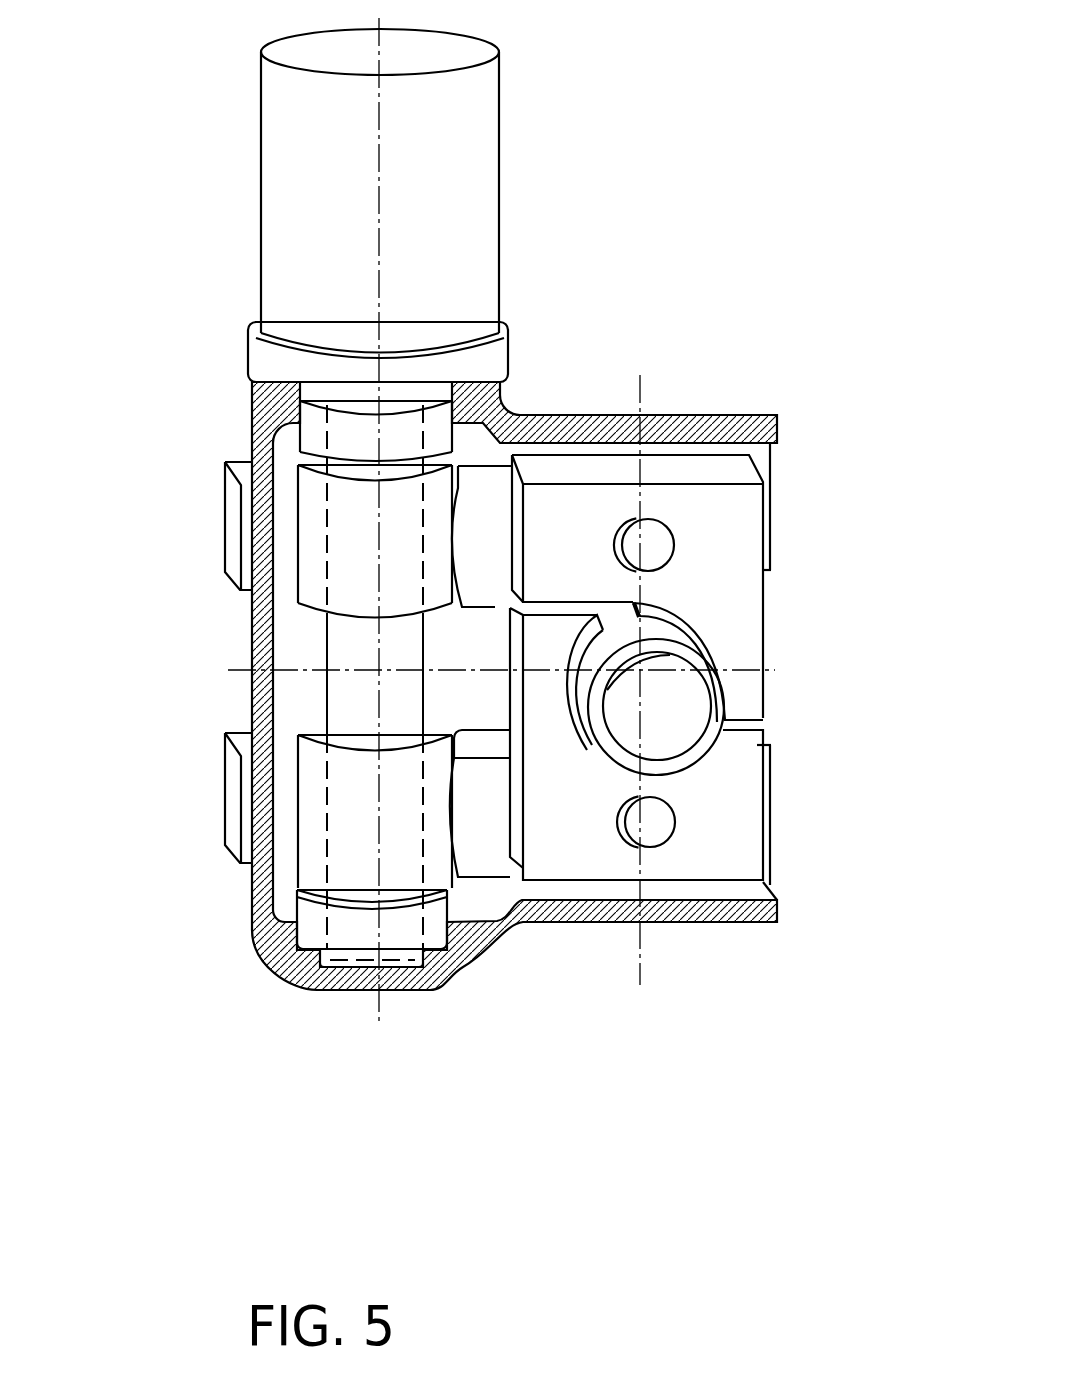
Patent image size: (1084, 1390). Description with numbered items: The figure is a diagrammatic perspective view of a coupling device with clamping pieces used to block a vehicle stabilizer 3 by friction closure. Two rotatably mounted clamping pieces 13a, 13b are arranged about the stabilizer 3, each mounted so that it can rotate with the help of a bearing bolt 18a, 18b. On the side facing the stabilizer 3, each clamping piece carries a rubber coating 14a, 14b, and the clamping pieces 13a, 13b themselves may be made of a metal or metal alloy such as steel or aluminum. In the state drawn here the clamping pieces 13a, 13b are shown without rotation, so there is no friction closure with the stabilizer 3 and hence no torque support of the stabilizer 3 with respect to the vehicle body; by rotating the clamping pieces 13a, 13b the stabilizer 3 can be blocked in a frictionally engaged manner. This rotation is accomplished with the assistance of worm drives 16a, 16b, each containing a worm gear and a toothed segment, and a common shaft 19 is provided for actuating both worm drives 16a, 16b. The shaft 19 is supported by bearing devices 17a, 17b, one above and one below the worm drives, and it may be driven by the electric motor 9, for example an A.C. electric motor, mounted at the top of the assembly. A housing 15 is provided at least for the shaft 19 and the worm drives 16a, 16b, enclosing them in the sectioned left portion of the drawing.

The electric motor 9 is at (296, 174).
The bearing device 17a is at (315, 432).
The housing 15 is at (235, 508).
The shaft 19 is at (355, 690).
The bearing device 17b is at (312, 923).
The worm drive 16a is at (490, 543).
The worm drive 16b is at (490, 820).
The clamping piece 13a is at (733, 546).
The clamping piece 13b is at (732, 808).
The rubber coating 14a is at (700, 632).
The rubber coating 14b is at (573, 660).
The bearing bolt 18a is at (648, 545).
The bearing bolt 18b is at (650, 822).
The stabilizer 3 is at (680, 716).